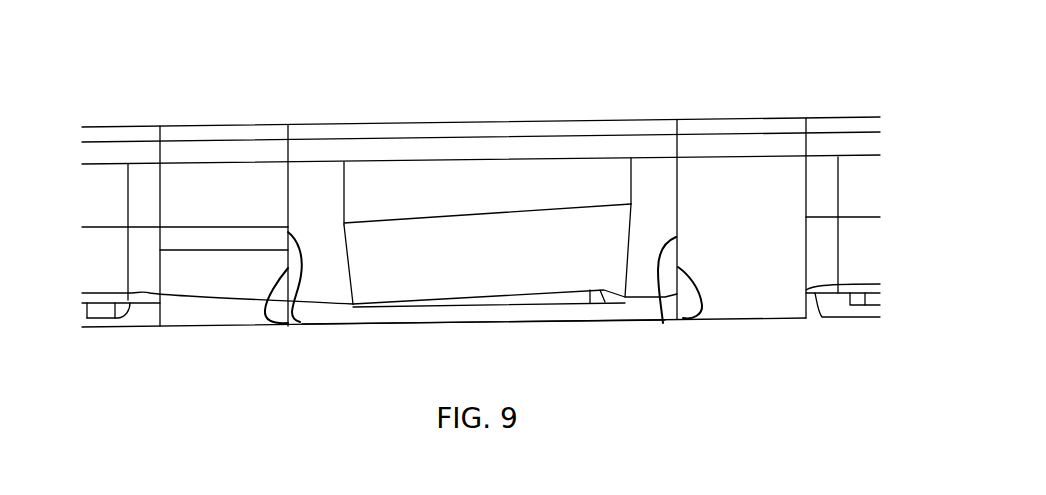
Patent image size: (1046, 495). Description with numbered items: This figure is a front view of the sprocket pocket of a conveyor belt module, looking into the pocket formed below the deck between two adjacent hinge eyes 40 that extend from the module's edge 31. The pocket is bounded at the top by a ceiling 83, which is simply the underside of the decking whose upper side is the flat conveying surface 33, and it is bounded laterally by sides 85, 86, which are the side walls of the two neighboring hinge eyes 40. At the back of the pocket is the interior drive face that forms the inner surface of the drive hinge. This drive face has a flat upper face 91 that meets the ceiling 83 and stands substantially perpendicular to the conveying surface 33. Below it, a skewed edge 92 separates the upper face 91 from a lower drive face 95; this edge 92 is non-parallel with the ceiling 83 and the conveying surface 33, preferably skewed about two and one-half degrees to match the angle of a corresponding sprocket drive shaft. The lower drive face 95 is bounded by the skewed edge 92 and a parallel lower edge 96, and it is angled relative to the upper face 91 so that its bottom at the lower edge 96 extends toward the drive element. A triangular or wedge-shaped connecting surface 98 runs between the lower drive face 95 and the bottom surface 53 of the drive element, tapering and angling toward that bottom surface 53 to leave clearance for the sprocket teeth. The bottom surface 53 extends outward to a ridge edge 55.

The edge 31 is at (543, 128).
The conveying surface 33 is at (438, 120).
The hinge eyes 40 is at (263, 137).
The bottom surface 53 is at (338, 311).
The ridge edge 55 is at (555, 331).
The ceiling 83 is at (516, 158).
The side 85 is at (672, 294).
The side 86 is at (297, 325).
The upper face 91 is at (424, 197).
The skewed edge 92 is at (483, 215).
The lower drive face 95 is at (492, 277).
The lower edge 96 is at (553, 295).
The connecting surface 98 is at (590, 300).